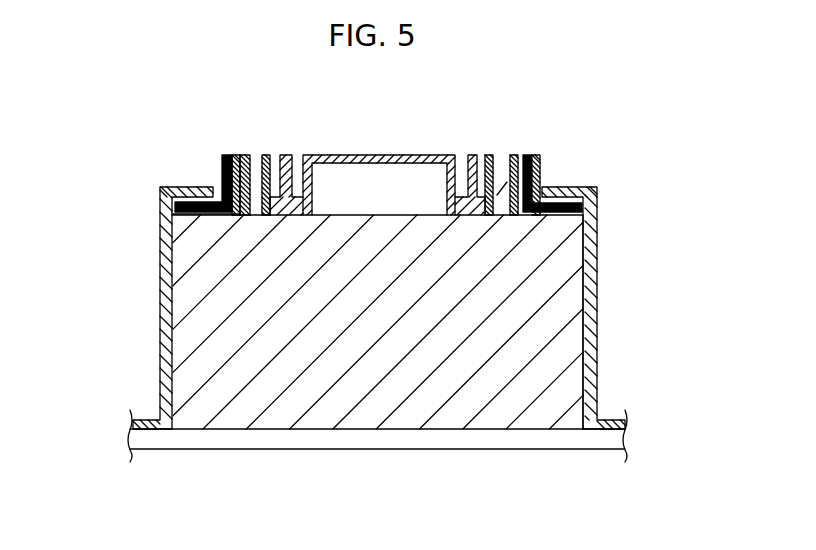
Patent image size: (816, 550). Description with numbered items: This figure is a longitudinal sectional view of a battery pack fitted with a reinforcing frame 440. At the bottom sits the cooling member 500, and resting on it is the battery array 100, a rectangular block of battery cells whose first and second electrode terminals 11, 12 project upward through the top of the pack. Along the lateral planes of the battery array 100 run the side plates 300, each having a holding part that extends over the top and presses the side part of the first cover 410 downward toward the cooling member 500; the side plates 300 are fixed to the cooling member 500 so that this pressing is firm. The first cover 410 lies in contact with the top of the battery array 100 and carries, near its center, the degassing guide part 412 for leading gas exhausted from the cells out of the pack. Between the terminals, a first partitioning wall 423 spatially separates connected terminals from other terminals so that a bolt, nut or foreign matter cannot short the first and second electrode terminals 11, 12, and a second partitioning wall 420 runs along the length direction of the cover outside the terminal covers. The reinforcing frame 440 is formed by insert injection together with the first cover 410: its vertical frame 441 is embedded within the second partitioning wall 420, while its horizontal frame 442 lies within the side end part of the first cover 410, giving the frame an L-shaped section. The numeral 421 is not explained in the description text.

The battery array 100 is at (570, 382).
The cooling member 500 is at (557, 440).
The side wall of case 421 is at (182, 220).
The reinforcing frame 440 is at (154, 160).
The vertical frame 441 is at (220, 163).
The horizontal frame 442 is at (197, 193).
The side plate 300 is at (185, 213).
The second partitioning wall 420 is at (228, 155).
The first partitioning wall 423 is at (531, 155).
The first electrode terminal 11 is at (253, 158).
The second electrode terminal 12 is at (520, 176).
The first cover 410 is at (285, 156).
The degassing guide part 412 is at (380, 155).